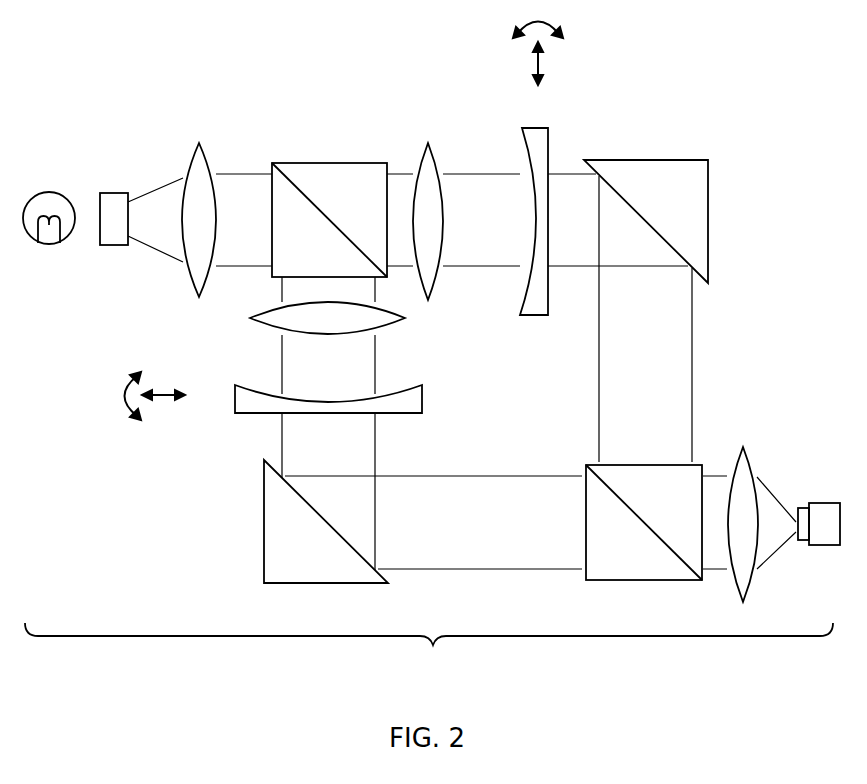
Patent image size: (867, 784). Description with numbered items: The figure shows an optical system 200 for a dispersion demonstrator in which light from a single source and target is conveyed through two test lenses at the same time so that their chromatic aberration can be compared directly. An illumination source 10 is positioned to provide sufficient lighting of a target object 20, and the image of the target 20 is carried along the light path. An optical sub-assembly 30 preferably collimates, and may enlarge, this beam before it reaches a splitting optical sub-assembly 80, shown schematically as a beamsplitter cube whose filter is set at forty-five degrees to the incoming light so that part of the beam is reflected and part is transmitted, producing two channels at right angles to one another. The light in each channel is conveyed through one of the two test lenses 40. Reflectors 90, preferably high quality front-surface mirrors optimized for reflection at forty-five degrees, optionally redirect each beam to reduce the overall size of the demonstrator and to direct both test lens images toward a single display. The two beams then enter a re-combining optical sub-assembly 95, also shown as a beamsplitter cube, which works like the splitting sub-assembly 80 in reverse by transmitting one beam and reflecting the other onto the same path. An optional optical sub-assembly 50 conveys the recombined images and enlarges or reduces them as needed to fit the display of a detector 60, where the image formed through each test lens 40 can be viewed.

The illumination source 10 is at (49, 202).
The target object 20 is at (113, 203).
The optical sub-assembly 30 is at (199, 207).
The test lens 40 is at (344, 221).
The optical sub-assembly 50 is at (743, 510).
The detector 60 is at (819, 511).
The splitting optical sub-assembly 80 is at (440, 130).
The reflectors 90 is at (488, 375).
The re-combining optical sub-assembly 95 is at (644, 541).
The optical system 200 is at (429, 652).